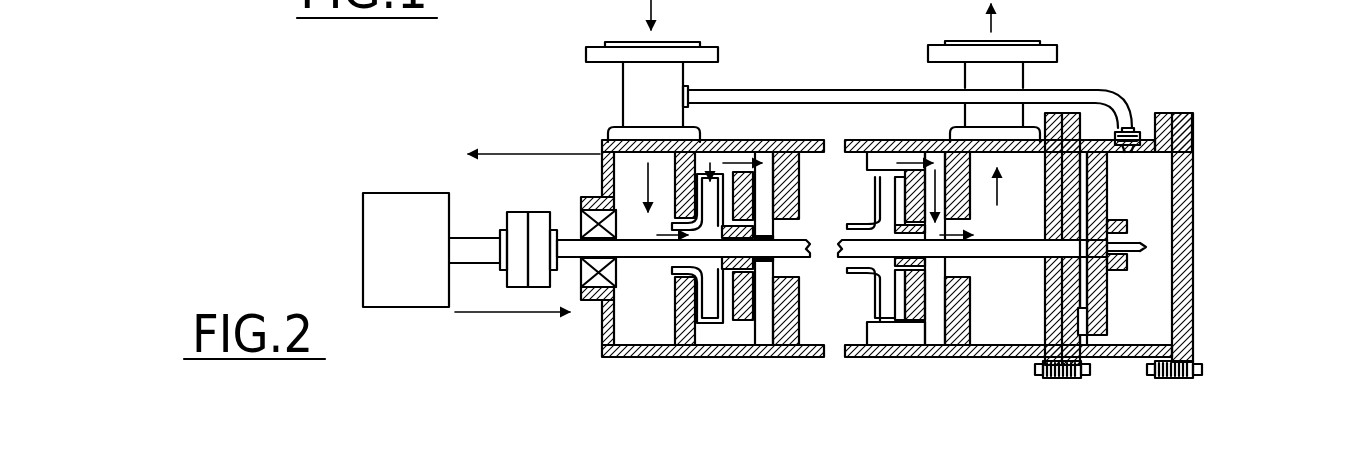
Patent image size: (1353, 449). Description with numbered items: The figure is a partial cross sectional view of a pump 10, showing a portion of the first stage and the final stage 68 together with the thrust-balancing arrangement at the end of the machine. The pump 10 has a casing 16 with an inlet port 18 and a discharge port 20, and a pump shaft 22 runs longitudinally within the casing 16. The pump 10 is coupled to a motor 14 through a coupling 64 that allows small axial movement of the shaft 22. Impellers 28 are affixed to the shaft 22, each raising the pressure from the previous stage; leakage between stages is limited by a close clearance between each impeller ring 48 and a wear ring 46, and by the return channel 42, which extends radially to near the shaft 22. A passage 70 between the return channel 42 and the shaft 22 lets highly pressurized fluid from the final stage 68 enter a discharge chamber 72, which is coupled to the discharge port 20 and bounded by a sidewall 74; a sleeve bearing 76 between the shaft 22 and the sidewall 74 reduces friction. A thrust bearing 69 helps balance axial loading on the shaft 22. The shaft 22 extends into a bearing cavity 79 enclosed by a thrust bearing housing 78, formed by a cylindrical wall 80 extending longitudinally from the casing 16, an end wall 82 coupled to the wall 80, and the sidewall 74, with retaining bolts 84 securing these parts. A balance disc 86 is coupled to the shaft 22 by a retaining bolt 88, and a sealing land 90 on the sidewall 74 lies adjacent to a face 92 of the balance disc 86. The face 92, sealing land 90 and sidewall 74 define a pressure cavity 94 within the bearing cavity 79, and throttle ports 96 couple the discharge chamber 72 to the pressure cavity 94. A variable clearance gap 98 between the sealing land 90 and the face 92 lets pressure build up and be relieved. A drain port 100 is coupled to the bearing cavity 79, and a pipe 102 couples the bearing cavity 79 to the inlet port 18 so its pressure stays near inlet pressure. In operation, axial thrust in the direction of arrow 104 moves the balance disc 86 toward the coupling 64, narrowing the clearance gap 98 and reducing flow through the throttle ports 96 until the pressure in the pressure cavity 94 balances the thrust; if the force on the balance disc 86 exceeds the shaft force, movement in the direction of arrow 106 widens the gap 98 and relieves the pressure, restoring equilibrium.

The pump 10 is at (350, 94).
The motor 14 is at (386, 193).
The casing 16 is at (797, 140).
The inlet port 18 is at (592, 48).
The discharge port 20 is at (938, 50).
The pump shaft 22 is at (583, 240).
The impeller 28 is at (867, 191).
The return channel 42 is at (745, 310).
The wear ring 46 is at (685, 335).
The impeller ring 48 is at (672, 268).
The coupling 64 is at (540, 213).
The final stage 68 is at (852, 172).
The thrust bearing 69 is at (1110, 308).
The passage 70 is at (982, 212).
The discharge chamber 72 is at (975, 163).
The sidewall 74 is at (1062, 305).
The sleeve bearing 76 is at (1067, 270).
The thrust bearing housing 78 is at (1190, 117).
The bearing cavity 79 is at (1165, 170).
The cylindrical wall 80 is at (1148, 130).
The end wall 82 is at (1190, 330).
The retaining bolt 84 is at (1040, 367).
The balance disc 86 is at (1102, 291).
The retaining bolt 88 is at (1148, 247).
The sealing land 90 is at (1083, 330).
The face 92 is at (1082, 185).
The pressure cavity 94 is at (1090, 225).
The throttle port 96 is at (1085, 215).
The variable clearance gap 98 is at (1089, 158).
The drain port 100 is at (1134, 128).
The pipe 102 is at (757, 90).
The arrow 104 is at (505, 152).
The arrow 106 is at (497, 318).